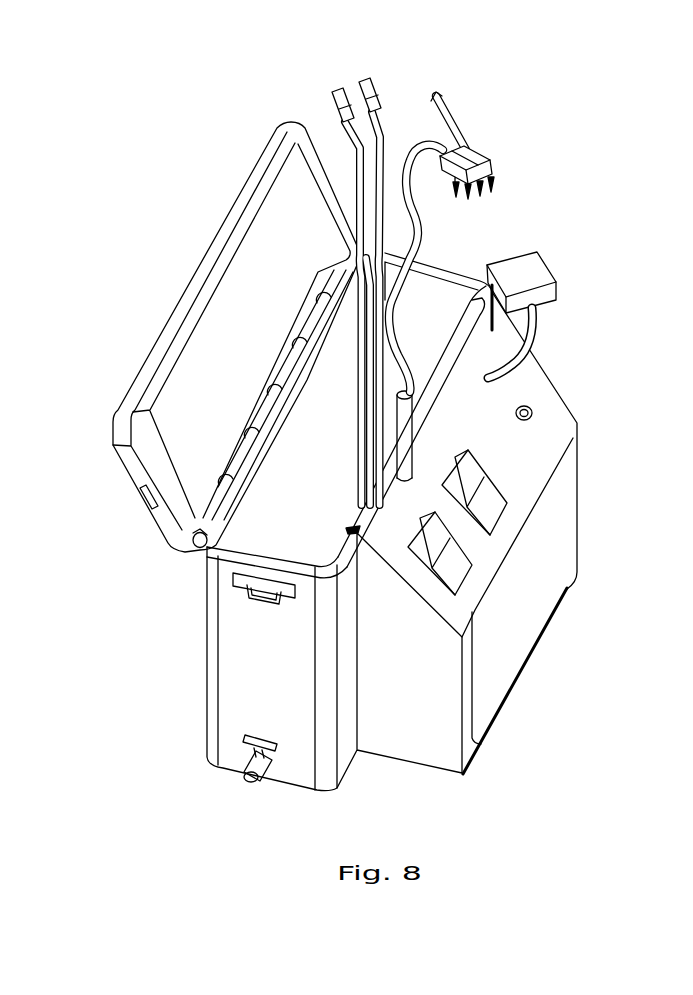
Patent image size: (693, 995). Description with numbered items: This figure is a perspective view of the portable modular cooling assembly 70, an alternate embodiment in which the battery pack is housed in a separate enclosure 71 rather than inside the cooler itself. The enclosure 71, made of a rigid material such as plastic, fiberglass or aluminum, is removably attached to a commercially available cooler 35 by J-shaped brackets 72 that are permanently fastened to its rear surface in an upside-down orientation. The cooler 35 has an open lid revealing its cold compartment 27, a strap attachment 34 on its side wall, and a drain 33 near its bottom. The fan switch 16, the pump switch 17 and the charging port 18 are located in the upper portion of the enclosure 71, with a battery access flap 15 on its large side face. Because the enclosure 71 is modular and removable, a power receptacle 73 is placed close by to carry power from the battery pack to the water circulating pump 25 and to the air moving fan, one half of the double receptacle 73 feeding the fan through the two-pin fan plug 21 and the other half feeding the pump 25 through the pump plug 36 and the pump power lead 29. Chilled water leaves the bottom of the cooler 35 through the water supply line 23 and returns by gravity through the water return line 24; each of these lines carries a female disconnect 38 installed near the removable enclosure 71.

The portable modular cooling assembly 70 is at (141, 197).
The water return line 24 is at (287, 124).
The cold compartment 27 is at (258, 525).
The cooler 35 is at (235, 682).
The enclosure 71 is at (437, 752).
The battery access flap 15 is at (505, 640).
The J-shaped bracket 72 is at (458, 340).
The fan switch 16 is at (500, 505).
The pump switch 17 is at (460, 572).
The charging port 18 is at (537, 415).
The power receptacle 73 is at (527, 268).
The pump 25 is at (400, 417).
The strap attachment 34 is at (238, 595).
The drain 33 is at (248, 752).
The water supply line 23 is at (378, 120).
The female disconnect 38 is at (363, 80).
The pump power lead 29 is at (457, 120).
The pump plug 36 is at (455, 163).
The fan plug 21 is at (482, 163).